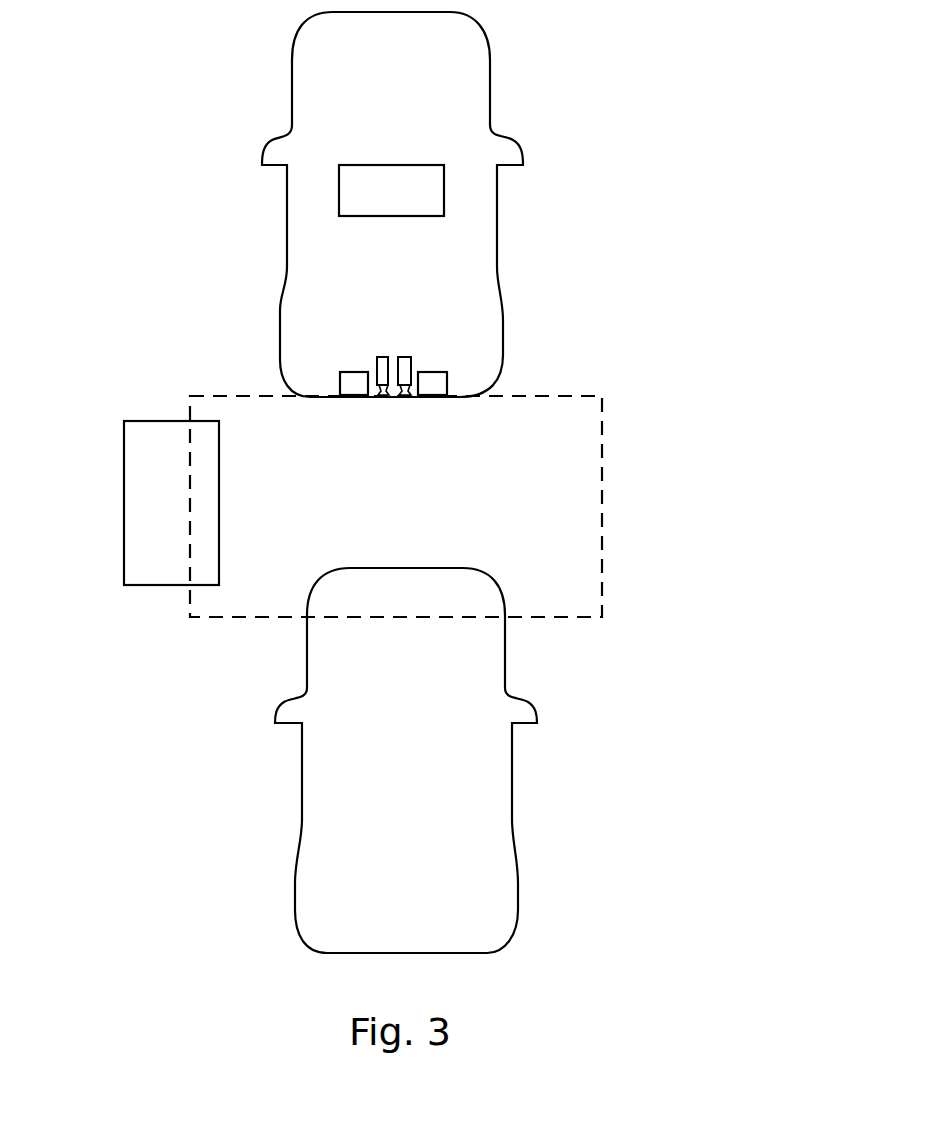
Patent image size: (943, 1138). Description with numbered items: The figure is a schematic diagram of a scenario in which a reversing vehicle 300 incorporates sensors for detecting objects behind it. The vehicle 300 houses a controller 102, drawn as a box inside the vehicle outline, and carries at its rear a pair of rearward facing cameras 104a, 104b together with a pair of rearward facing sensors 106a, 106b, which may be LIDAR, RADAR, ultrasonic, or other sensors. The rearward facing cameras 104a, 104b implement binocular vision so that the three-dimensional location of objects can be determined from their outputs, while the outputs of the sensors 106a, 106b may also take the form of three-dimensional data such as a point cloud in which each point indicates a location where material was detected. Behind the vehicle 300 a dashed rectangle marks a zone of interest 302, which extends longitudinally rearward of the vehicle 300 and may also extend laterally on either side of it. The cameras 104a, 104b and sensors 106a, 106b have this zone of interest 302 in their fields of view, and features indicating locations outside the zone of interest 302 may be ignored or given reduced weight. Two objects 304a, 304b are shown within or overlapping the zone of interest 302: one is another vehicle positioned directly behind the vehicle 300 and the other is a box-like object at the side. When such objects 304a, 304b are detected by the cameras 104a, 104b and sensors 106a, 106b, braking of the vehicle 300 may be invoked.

The controller 102 is at (373, 203).
The rearward facing camera 104a is at (378, 362).
The rearward facing camera 104b is at (400, 358).
The rearward facing sensor 106a is at (355, 385).
The rearward facing sensor 106b is at (430, 385).
The vehicle 300 is at (497, 207).
The zone of interest 302 is at (602, 528).
The object 304a is at (503, 945).
The object 304b is at (124, 585).